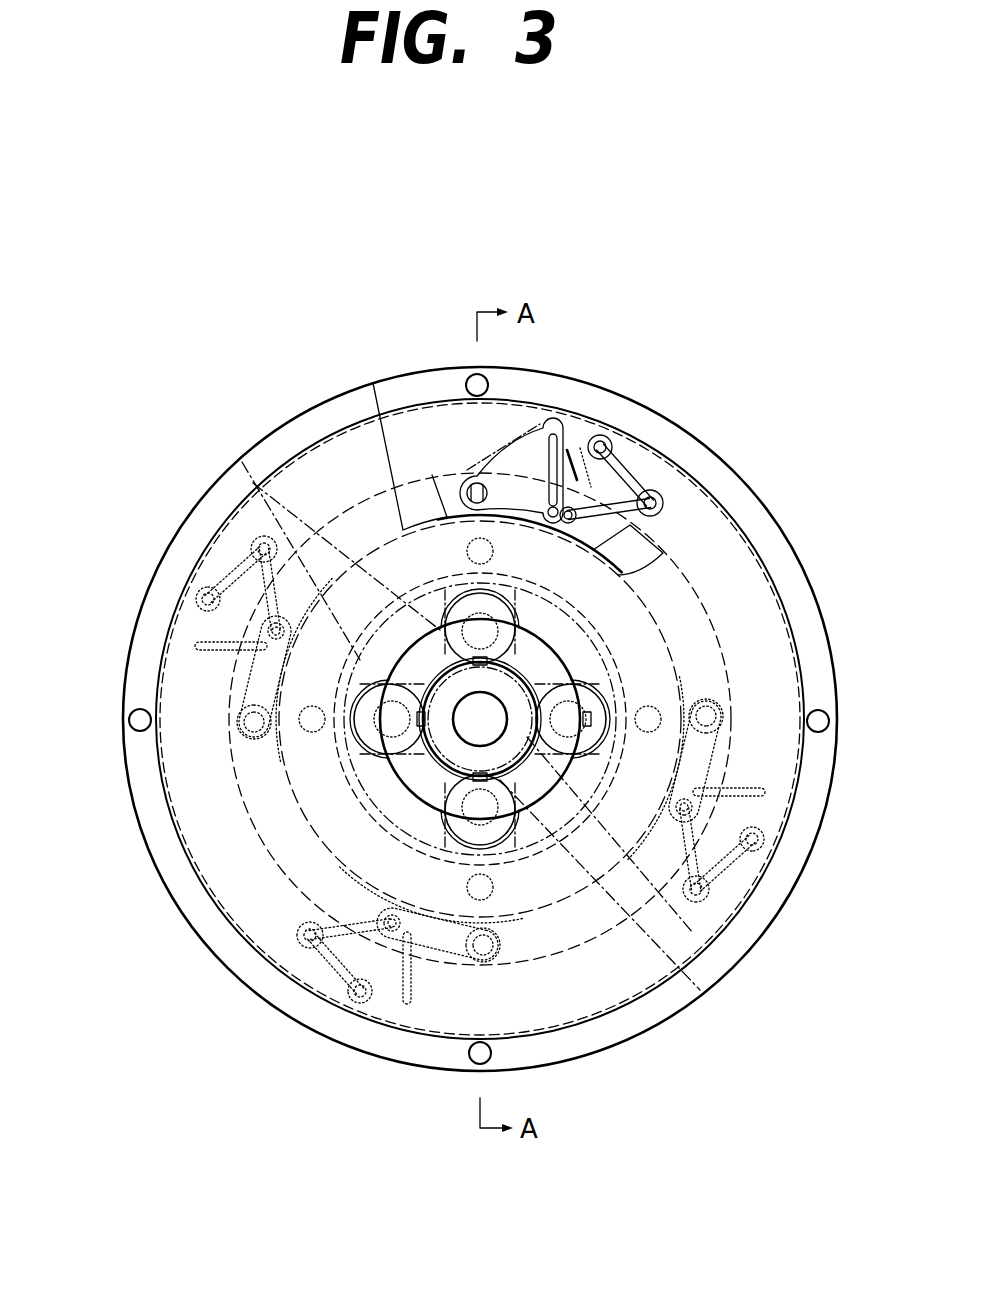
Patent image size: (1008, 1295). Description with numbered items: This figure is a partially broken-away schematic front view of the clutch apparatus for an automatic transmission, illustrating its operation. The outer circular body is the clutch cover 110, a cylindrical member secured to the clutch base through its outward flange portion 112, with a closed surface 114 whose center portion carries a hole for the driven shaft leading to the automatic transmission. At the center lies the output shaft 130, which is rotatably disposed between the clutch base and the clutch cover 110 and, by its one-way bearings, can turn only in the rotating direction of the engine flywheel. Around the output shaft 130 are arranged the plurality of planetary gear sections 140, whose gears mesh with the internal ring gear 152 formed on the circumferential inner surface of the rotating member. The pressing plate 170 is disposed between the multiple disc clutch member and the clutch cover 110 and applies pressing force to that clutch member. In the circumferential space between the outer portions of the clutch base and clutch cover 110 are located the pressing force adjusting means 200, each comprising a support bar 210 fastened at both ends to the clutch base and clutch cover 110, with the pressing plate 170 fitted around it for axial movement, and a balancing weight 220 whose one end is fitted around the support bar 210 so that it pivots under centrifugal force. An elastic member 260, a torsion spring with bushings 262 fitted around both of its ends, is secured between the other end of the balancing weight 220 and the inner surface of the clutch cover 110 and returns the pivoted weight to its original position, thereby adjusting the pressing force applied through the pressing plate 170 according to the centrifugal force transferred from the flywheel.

The clutch cover 110 is at (762, 545).
The outward flange portion 112 is at (820, 628).
The closed surface 114 is at (748, 606).
The output shaft 130 is at (450, 800).
The planetary gear sections 140 is at (253, 483).
The internal ring gear 152 is at (430, 755).
The pressing plate 170 is at (432, 475).
The pressing force adjusting means 200 is at (474, 716).
The support bar 210 is at (482, 490).
The balancing weight 220 is at (556, 418).
The elastic member 260 is at (656, 500).
The bushings 262 is at (618, 446).